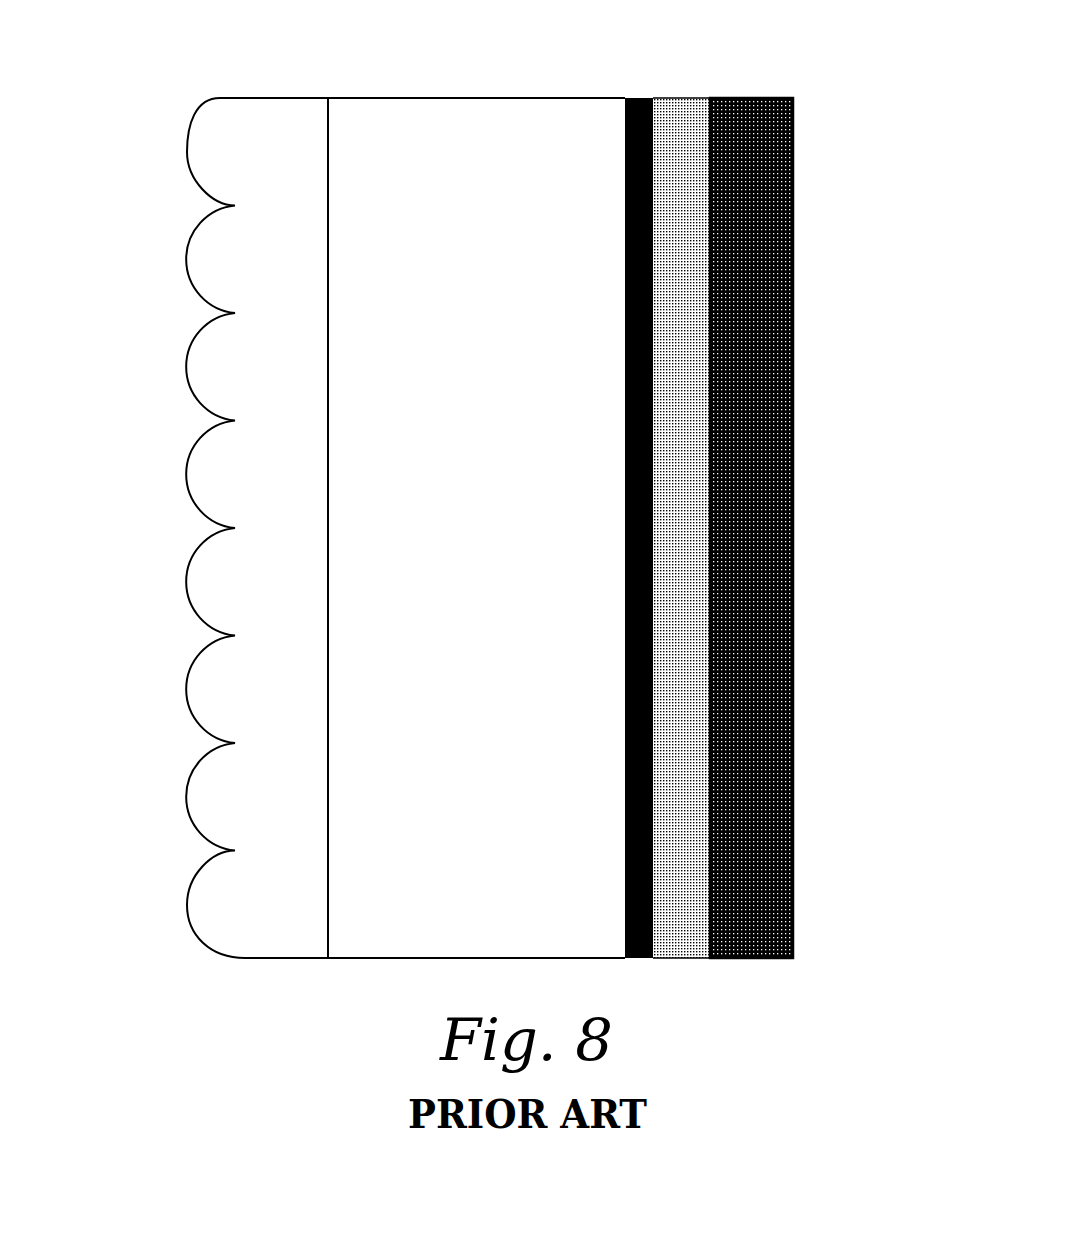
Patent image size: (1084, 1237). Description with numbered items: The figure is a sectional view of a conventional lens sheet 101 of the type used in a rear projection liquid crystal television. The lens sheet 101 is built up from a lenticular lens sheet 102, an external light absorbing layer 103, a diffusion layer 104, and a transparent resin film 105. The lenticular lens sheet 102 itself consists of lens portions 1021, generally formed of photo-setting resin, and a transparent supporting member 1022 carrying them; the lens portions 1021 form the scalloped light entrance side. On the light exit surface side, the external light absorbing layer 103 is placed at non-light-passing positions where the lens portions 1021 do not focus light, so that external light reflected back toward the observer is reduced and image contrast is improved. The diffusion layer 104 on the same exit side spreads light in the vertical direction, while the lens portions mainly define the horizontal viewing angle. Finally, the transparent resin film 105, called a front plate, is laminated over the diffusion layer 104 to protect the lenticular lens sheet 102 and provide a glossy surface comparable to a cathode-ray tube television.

The lens sheet 101 is at (692, 64).
The lenticular lens sheet 102 is at (623, 88).
The lens portions 1021 is at (243, 262).
The transparent supporting member 1022 is at (367, 660).
The external light absorbing layer 103 is at (653, 198).
The diffusion layer 104 is at (703, 692).
The transparent resin film 105 is at (757, 843).